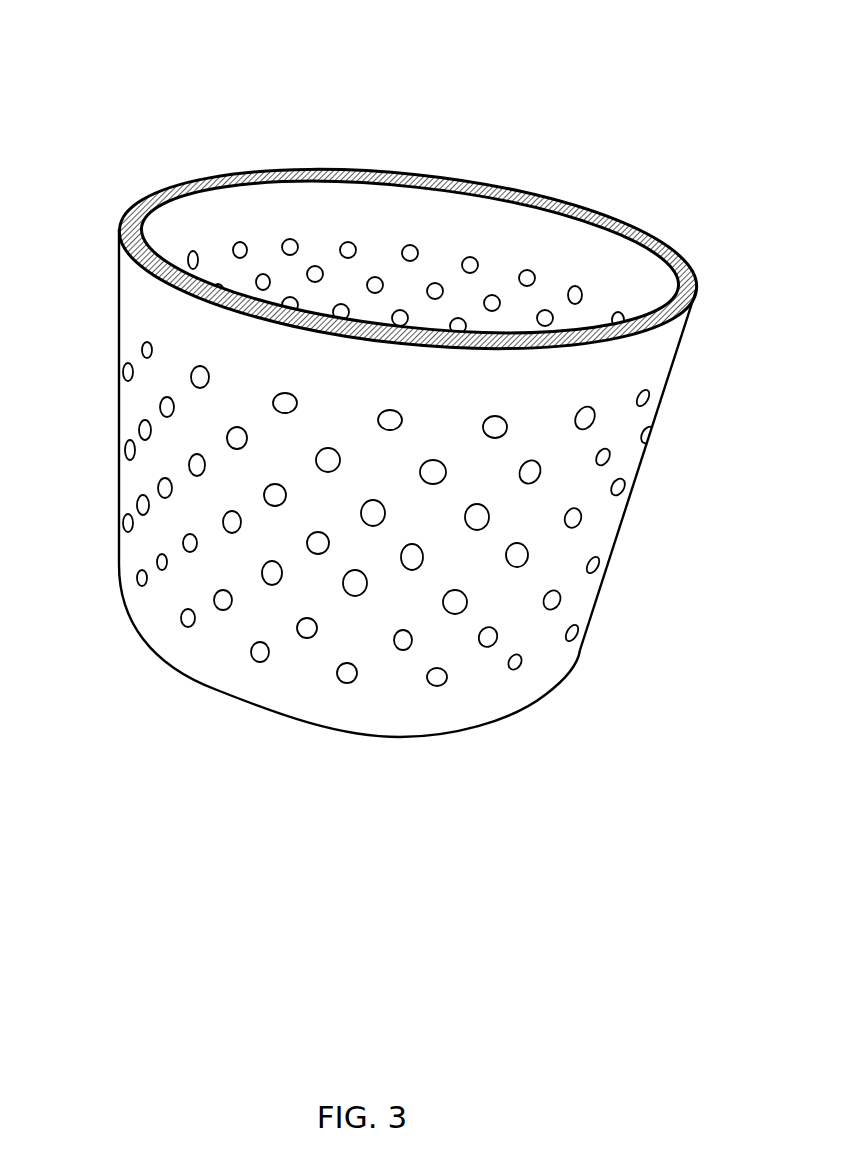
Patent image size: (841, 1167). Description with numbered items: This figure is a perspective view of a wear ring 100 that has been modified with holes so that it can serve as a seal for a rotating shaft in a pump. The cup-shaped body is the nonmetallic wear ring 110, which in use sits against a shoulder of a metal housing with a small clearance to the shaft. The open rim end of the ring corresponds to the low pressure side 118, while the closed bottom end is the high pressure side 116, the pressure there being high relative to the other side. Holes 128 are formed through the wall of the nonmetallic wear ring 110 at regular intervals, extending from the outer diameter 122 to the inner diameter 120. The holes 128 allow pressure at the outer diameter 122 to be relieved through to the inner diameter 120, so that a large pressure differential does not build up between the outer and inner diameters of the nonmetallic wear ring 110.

The wear ring 100 is at (560, 228).
The nonmetallic wear ring 110 is at (238, 132).
The high pressure side 116 is at (358, 737).
The low pressure side 118 is at (303, 174).
The inner diameter 120 is at (182, 244).
The outer diameter 122 is at (145, 311).
The holes 128 is at (407, 249).